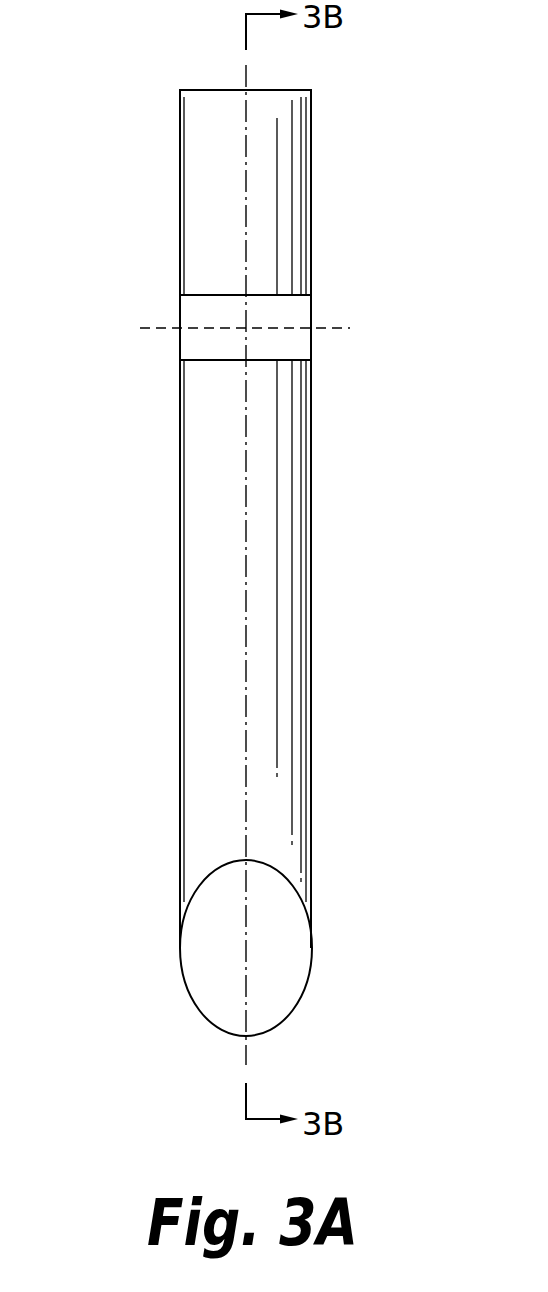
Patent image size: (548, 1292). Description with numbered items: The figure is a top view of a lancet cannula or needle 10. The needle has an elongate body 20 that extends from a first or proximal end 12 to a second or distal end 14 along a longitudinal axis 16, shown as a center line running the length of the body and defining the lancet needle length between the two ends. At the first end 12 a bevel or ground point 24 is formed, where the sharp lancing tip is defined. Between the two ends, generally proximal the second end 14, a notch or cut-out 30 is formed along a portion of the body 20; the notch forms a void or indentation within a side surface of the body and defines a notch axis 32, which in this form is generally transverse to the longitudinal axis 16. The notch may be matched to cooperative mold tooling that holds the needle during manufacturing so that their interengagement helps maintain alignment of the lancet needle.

The lancet needle 10 is at (79, 146).
The first end 12 is at (189, 1067).
The second end 14 is at (207, 58).
The longitudinal axis 16 is at (246, 203).
The elongate body 20 is at (260, 608).
The ground point 24 is at (286, 973).
The notch 30 is at (200, 343).
The notch axis 32 is at (330, 326).